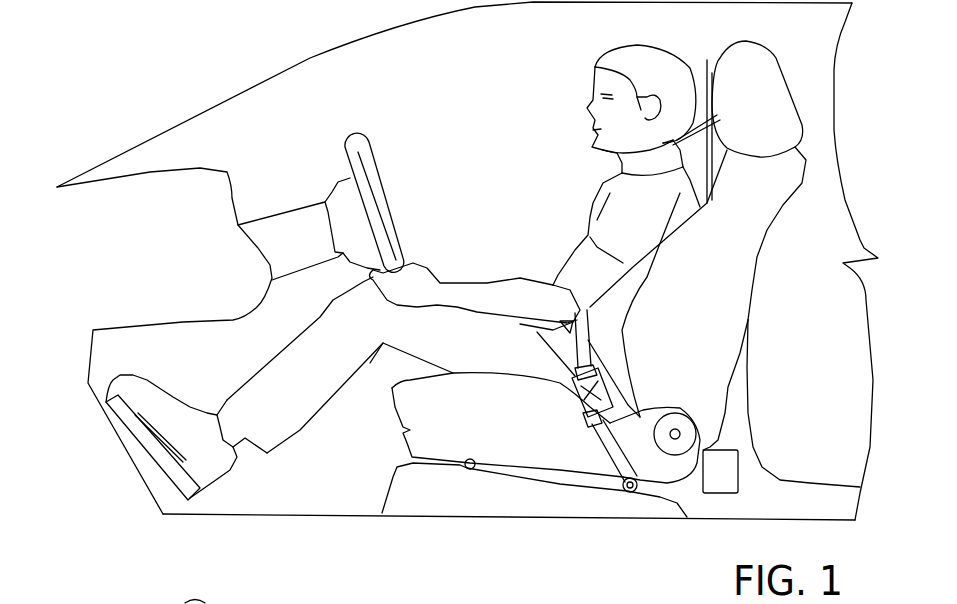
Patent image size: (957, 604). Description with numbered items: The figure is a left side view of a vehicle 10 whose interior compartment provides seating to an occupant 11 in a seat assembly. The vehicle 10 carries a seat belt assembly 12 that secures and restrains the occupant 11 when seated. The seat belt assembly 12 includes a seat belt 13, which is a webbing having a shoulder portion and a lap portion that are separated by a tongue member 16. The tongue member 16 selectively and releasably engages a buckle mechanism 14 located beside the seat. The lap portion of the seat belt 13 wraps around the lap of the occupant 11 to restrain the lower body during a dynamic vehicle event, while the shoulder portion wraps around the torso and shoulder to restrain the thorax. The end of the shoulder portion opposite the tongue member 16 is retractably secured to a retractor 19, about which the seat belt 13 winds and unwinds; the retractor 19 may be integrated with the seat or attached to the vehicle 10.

The vehicle 10 is at (149, 55).
The occupant 11 is at (520, 296).
The seat belt assembly 12 is at (572, 182).
The seat belt 13 is at (728, 438).
The buckle mechanism 14 is at (573, 405).
The tongue member 16 is at (572, 377).
The retractor 19 is at (727, 480).